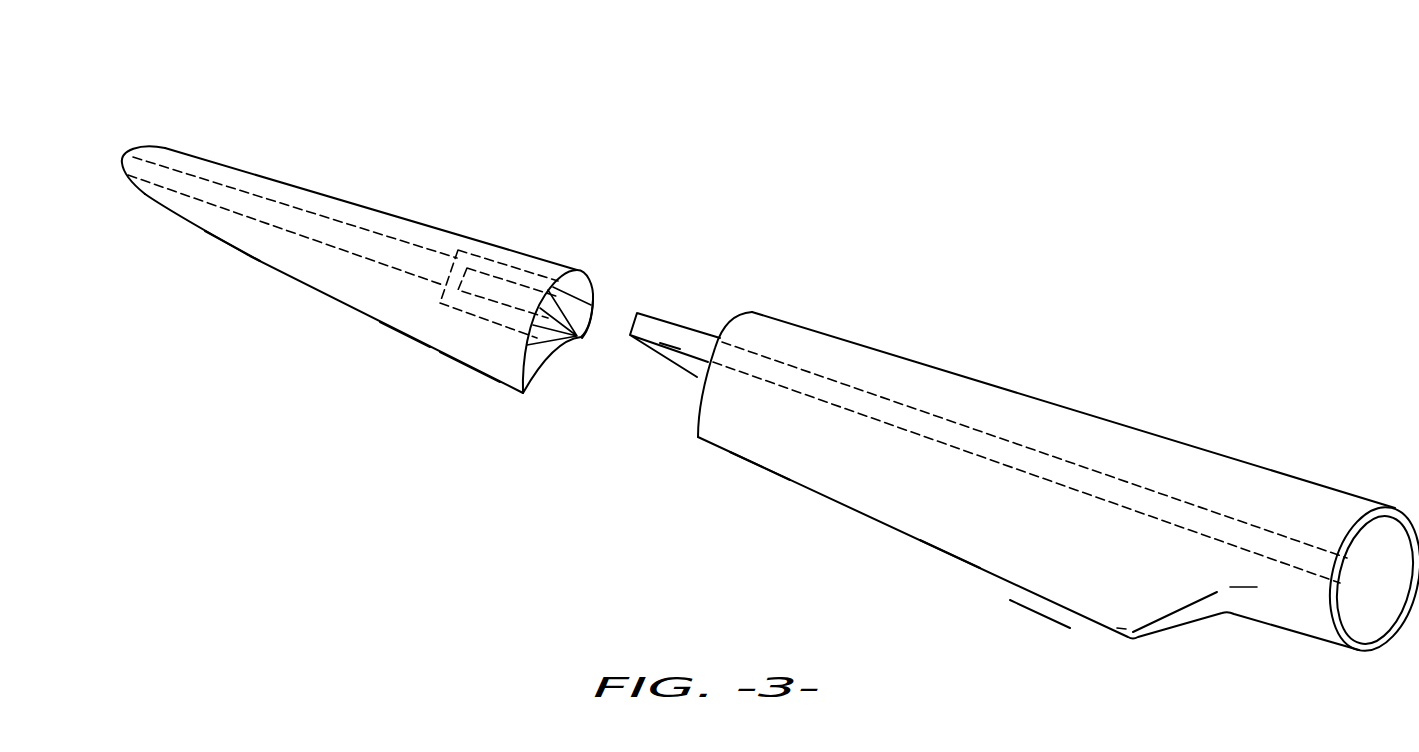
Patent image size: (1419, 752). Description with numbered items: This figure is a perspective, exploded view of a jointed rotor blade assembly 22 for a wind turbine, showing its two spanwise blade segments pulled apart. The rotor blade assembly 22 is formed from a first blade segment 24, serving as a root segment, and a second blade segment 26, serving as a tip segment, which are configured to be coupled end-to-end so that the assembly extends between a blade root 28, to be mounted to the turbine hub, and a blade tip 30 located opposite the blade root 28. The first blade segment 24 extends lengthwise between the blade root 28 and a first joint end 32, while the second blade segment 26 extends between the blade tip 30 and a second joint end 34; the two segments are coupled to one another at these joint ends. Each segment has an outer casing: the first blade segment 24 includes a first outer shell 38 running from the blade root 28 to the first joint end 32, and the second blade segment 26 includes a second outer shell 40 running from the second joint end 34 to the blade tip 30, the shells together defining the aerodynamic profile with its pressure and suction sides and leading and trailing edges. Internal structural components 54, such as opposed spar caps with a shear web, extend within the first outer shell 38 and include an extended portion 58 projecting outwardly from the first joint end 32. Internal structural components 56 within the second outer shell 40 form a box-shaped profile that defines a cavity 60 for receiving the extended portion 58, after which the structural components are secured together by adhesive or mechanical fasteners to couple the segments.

The jointed rotor blade assembly 22 is at (763, 366).
The first blade segment 24 is at (1080, 333).
The second blade segment 26 is at (358, 137).
The blade root 28 is at (1397, 508).
The blade tip 30 is at (122, 162).
The first joint end 32 is at (726, 326).
The second joint end 34 is at (594, 288).
The first outer shell 38 is at (862, 480).
The second outer shell 40 is at (330, 277).
The internal structural component 54 is at (1105, 475).
The internal structural component 56 is at (223, 184).
The extended portion 58 is at (672, 358).
The cavity 60 is at (580, 340).